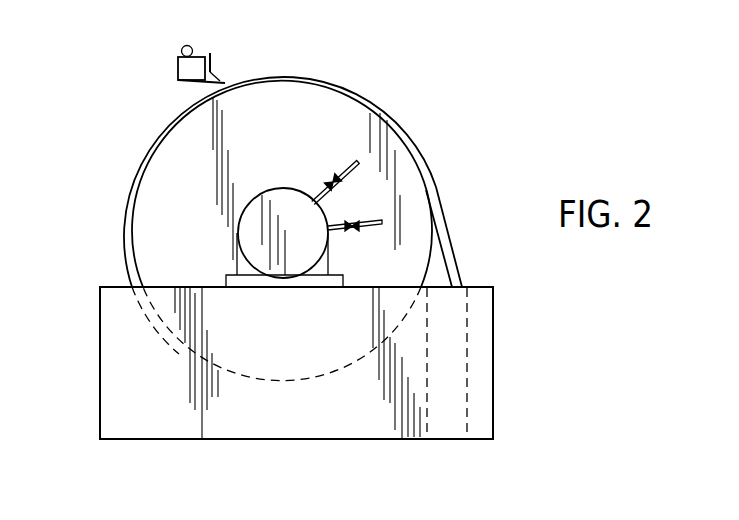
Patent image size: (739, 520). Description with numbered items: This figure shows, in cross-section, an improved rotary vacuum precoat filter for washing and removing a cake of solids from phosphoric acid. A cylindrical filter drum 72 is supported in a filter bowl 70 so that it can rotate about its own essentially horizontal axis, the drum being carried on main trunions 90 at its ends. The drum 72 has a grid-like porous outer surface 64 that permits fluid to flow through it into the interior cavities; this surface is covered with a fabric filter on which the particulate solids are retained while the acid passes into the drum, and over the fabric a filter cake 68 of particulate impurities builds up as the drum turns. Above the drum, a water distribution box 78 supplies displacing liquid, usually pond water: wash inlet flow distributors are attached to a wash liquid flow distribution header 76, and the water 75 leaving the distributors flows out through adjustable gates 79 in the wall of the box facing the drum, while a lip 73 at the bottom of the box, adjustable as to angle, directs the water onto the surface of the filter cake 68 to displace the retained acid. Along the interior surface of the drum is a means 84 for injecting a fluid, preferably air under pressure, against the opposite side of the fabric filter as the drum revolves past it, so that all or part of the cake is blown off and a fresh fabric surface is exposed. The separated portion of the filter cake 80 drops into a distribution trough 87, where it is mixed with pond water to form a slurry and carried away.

The porous outer surface 64 is at (426, 192).
The filter cake 68 is at (121, 200).
The filter bowl 70 is at (115, 356).
The cylindrical filter drum 72 is at (290, 141).
The lip 73 is at (224, 81).
The water 75 is at (230, 77).
The wash liquid flow distribution header 76 is at (187, 45).
The water distribution box 78 is at (178, 70).
The adjustable gates 79 is at (211, 62).
The portion of the filter cake 80 is at (458, 262).
The means for injecting a fluid 84 is at (357, 170).
The distribution trough 87 is at (452, 408).
The main trunions 90 is at (238, 233).